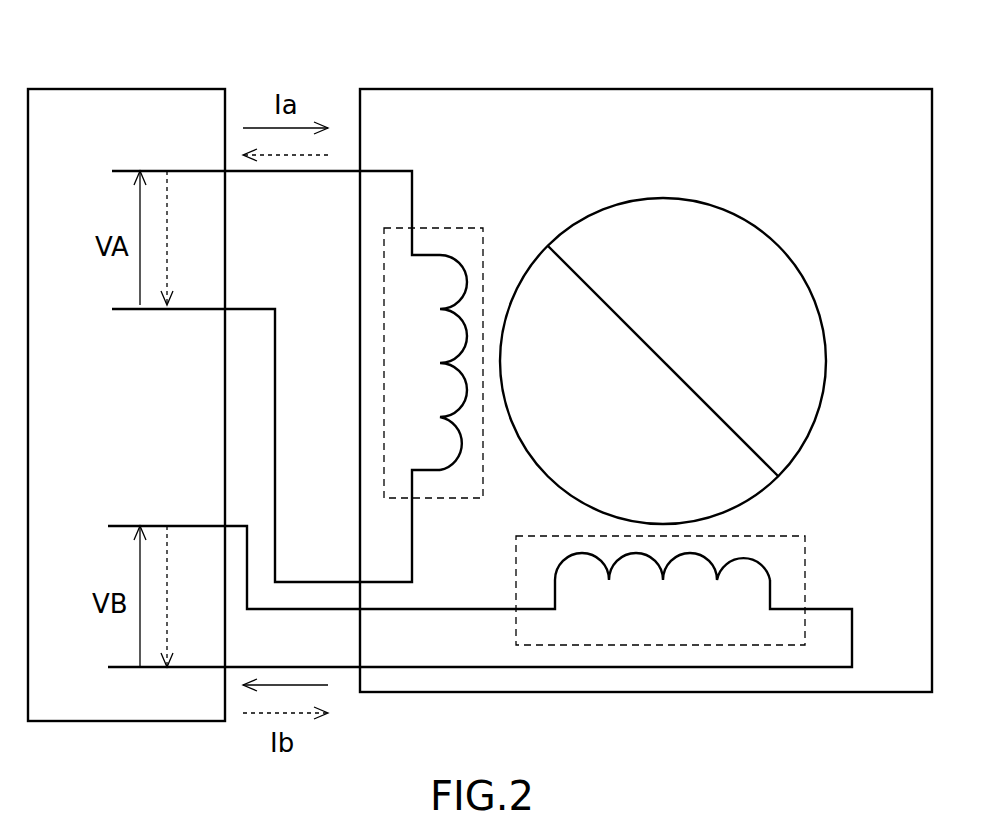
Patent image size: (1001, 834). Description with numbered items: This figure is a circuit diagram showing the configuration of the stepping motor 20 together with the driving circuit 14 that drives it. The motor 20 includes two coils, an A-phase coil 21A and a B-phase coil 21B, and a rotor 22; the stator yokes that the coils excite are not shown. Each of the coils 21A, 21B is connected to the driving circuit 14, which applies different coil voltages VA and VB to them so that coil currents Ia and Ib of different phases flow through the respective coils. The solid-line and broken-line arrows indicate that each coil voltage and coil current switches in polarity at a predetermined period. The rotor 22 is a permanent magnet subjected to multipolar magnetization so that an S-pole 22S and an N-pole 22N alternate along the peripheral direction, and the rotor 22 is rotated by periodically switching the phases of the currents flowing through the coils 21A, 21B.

The driving circuit 14 is at (115, 89).
The motor 20 is at (598, 89).
The A-phase coil 21A is at (440, 228).
The B-phase coil 21B is at (810, 572).
The rotor 22 is at (810, 258).
The N-pole 22N is at (720, 242).
The S-pole 22S is at (565, 468).